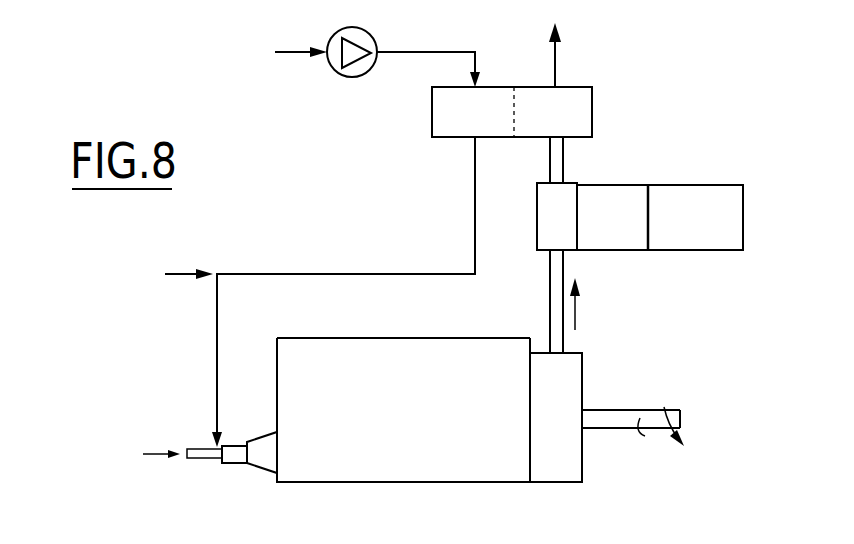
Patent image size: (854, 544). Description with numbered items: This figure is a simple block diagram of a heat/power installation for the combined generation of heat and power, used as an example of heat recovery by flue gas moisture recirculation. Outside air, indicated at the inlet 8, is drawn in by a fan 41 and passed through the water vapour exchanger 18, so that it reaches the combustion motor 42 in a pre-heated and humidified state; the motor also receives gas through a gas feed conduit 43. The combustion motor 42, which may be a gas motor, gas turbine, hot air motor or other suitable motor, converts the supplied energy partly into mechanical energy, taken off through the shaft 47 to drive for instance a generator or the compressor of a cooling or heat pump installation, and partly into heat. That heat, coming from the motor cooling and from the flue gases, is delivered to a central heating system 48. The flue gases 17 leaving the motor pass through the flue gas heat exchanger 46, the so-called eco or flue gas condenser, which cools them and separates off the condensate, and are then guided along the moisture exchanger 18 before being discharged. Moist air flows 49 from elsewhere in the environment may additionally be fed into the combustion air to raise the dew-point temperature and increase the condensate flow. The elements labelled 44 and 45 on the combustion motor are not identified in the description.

The feed line 8 is at (292, 50).
The fan 41 is at (363, 72).
The water vapour exchanger 18 is at (523, 82).
The moist air flows 49 is at (303, 292).
The flue gases 17 is at (550, 307).
The flue gas heat exchanger 46 is at (557, 220).
The central heating system 48 is at (707, 211).
The reactor interior 45 is at (421, 356).
The combustion motor 42 is at (418, 468).
The nozzle 44 is at (275, 397).
The gas feed conduit 43 is at (207, 462).
The shaft 47 is at (660, 410).